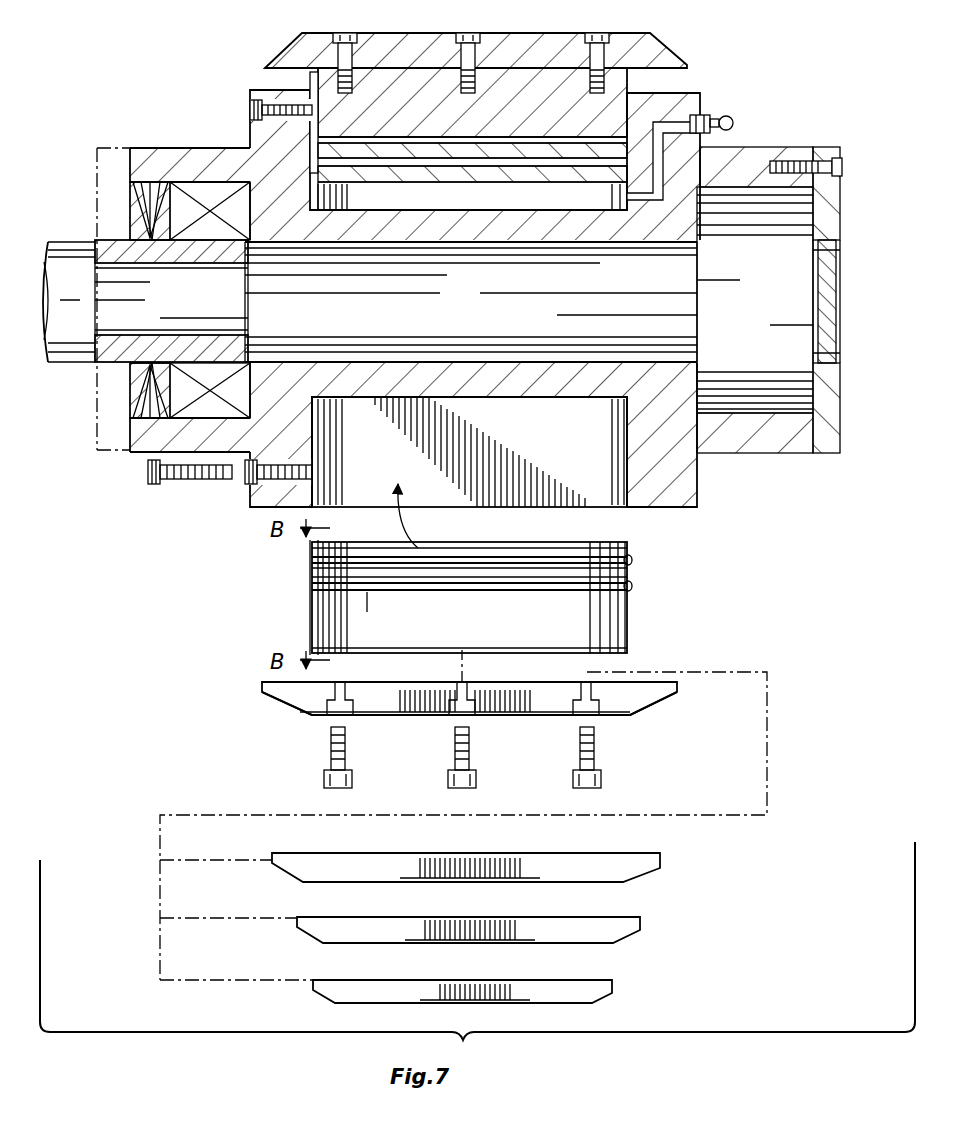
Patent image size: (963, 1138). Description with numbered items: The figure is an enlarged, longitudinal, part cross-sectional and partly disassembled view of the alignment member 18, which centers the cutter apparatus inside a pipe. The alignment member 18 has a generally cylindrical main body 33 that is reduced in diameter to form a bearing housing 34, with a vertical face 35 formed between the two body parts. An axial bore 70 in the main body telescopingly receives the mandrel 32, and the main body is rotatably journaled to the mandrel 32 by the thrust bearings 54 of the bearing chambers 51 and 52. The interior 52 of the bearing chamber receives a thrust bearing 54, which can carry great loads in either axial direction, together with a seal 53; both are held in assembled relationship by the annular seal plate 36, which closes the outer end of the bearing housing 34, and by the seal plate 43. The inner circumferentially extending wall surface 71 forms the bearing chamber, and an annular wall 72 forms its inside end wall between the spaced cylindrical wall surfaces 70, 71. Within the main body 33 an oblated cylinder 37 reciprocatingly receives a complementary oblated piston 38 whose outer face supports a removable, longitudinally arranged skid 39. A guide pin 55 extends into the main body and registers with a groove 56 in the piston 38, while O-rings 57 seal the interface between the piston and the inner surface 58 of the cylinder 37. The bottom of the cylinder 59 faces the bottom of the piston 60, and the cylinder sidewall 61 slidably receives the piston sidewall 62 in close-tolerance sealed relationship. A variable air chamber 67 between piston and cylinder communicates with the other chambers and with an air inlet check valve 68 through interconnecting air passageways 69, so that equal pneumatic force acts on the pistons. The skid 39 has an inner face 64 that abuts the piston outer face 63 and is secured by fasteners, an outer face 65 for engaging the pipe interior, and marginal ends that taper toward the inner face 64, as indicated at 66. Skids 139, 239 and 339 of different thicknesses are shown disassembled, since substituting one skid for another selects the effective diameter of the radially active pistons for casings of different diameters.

The alignment member 18 is at (236, 56).
The mandrel 32 is at (72, 241).
The main body 33 is at (157, 148).
The bearing housing 34 is at (786, 145).
The vertical face 35 is at (700, 110).
The annular seal plate 36 is at (832, 147).
The cylinder 37 is at (419, 516).
The oblated piston 38 is at (640, 86).
The skid 39 is at (664, 36).
The seal plate 43 is at (105, 148).
The bearing chamber 51 is at (184, 307).
The bearing chamber interior 52 is at (770, 295).
The seal 53 is at (135, 198).
The thrust bearing 54 is at (212, 180).
The guide pin 55 is at (250, 111).
The groove 56 is at (312, 80).
The O-rings 57 is at (604, 146).
The inner surface of cylinder 58 is at (613, 184).
The bottom of the cylinder 59 is at (520, 184).
The bottom of the piston 60 is at (346, 192).
The cylinder sidewall 61 is at (600, 212).
The piston sidewall 62 is at (474, 627).
The outer face of the piston 63 is at (478, 658).
The inner face of skid 64 is at (436, 686).
The outer face of skid 65 is at (496, 717).
The tapered marginal ends 66 is at (290, 714).
The variable air chamber 67 is at (464, 209).
The air inlet check valve 68 is at (731, 128).
The air passageways 69 is at (698, 146).
The axial bore 70 is at (455, 248).
The inner circumferential wall surface 71 is at (766, 413).
The annular wall 72 is at (705, 383).
The skid 139 is at (518, 853).
The skid 239 is at (520, 917).
The skid 339 is at (516, 980).